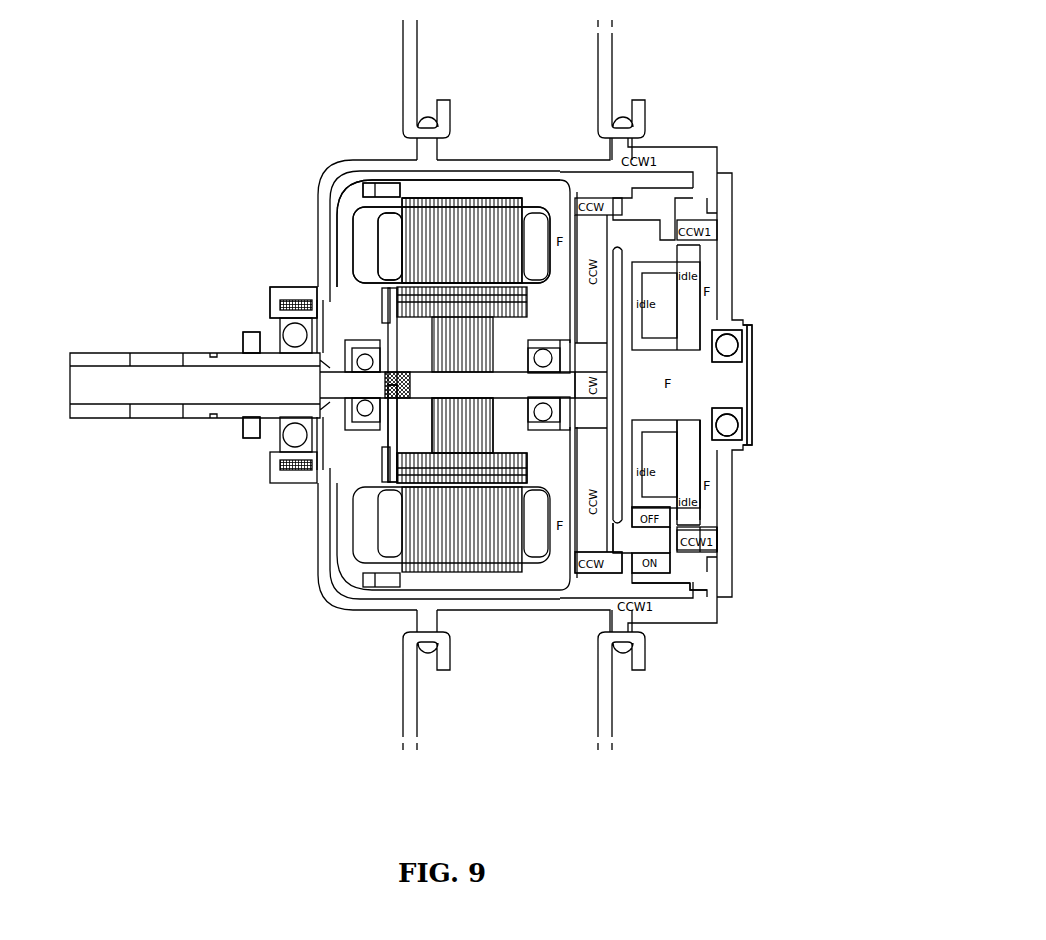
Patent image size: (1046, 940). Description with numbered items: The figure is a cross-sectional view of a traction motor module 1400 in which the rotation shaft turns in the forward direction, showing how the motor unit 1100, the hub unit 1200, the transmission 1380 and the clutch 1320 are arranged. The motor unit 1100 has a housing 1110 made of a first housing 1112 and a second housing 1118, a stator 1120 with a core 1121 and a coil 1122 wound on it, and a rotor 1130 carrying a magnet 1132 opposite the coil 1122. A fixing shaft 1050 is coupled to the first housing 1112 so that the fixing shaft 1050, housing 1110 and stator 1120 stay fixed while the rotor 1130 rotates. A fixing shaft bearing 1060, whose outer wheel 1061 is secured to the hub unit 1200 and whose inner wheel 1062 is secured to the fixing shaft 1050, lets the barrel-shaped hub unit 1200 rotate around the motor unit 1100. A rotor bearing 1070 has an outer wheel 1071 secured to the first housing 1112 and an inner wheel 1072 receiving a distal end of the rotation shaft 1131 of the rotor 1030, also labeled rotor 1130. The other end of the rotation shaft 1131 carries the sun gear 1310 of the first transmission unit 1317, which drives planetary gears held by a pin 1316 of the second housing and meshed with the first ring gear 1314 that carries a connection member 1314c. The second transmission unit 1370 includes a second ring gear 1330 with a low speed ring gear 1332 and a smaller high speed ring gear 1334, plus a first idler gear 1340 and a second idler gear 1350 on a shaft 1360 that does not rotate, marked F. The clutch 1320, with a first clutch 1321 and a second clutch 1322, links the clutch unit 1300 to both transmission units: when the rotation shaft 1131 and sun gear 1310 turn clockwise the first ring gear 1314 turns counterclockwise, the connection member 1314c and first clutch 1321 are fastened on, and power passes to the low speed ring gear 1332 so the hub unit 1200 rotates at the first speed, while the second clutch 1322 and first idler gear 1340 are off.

The rotor 1030 is at (407, 78).
The fixing shaft 1050 is at (90, 357).
The fixing shaft bearing 1060 is at (290, 337).
The outer wheel 1061 is at (285, 316).
The inner wheel 1062 is at (275, 347).
The rotor bearing 1070 is at (350, 414).
The outer wheel 1071 is at (360, 420).
The inner wheel 1072 is at (300, 423).
The motor unit 1100 is at (384, 187).
The housing 1110 is at (527, 188).
The first housing 1112 is at (343, 233).
The second housing 1118 is at (460, 190).
The stator 1120 is at (483, 218).
The core 1121 is at (420, 232).
The coil 1122 is at (385, 258).
The rotor 1130 is at (448, 447).
The rotation shaft 1131 is at (502, 388).
The magnet 1132 is at (467, 470).
The hub unit 1200 is at (318, 183).
The clutch unit 1300 is at (745, 190).
The sun gear 1310 is at (605, 400).
The first ring gear 1314 is at (600, 548).
The connection member 1314c is at (643, 530).
The pin 1316 is at (558, 192).
The first transmission unit 1317 is at (605, 580).
The clutch 1320 is at (670, 550).
The first clutch 1321 is at (670, 558).
The second clutch 1322 is at (677, 528).
The second ring gear 1330 is at (717, 532).
The low speed ring gear 1332 is at (660, 588).
The high speed ring gear 1334 is at (720, 546).
The first idle gear 1340 is at (747, 440).
The second idle gear 1350 is at (687, 458).
The shaft 1360 is at (720, 380).
The second transmission unit 1370 is at (682, 592).
The transmission 1380 is at (735, 717).
The drive unit 1400 is at (681, 62).